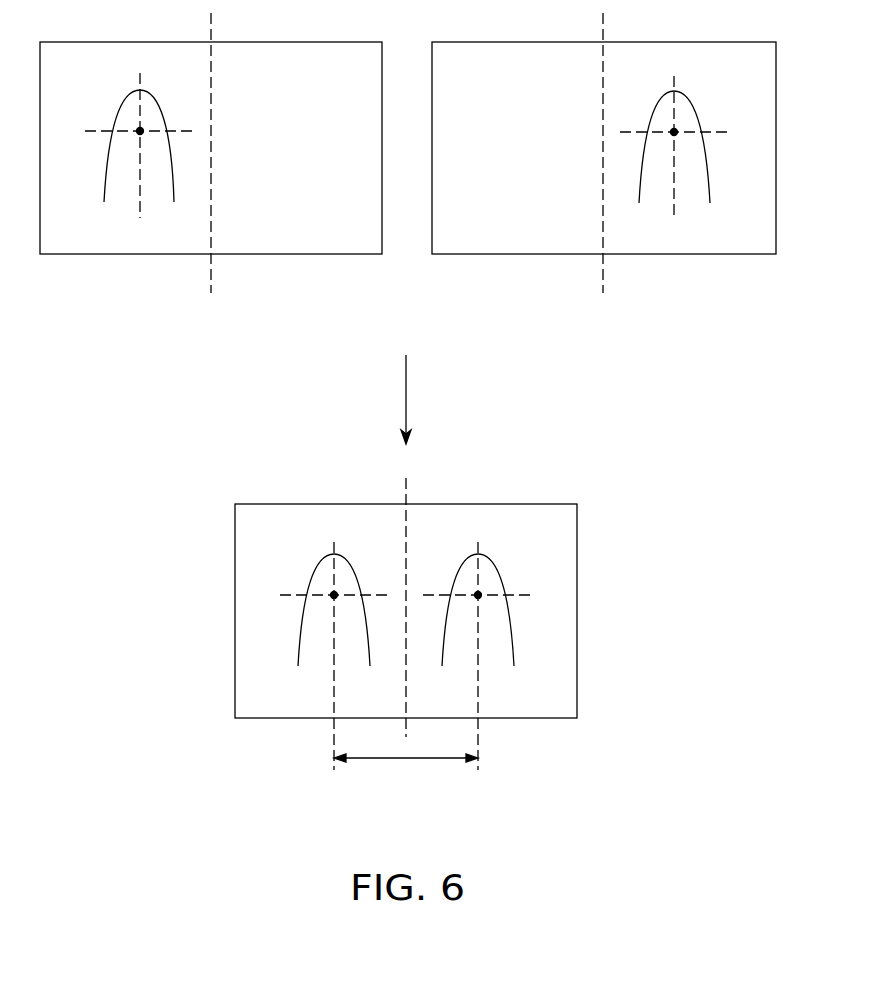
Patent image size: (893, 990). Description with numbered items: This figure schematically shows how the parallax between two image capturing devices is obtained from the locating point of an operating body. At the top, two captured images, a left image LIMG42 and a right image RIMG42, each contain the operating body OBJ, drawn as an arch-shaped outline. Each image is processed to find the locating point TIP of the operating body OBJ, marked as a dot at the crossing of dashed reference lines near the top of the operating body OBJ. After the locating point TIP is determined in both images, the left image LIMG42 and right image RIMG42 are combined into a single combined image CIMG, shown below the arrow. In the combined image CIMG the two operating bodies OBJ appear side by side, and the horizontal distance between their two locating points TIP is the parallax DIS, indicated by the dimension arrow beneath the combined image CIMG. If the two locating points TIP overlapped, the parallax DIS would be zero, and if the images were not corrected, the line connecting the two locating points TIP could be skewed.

The locating point TIP is at (139, 130).
The operating body OBJ is at (104, 170).
The left image LIMG42 is at (121, 257).
The right image RIMG42 is at (693, 257).
The combined image CIMG is at (561, 720).
The parallax DIS is at (406, 773).